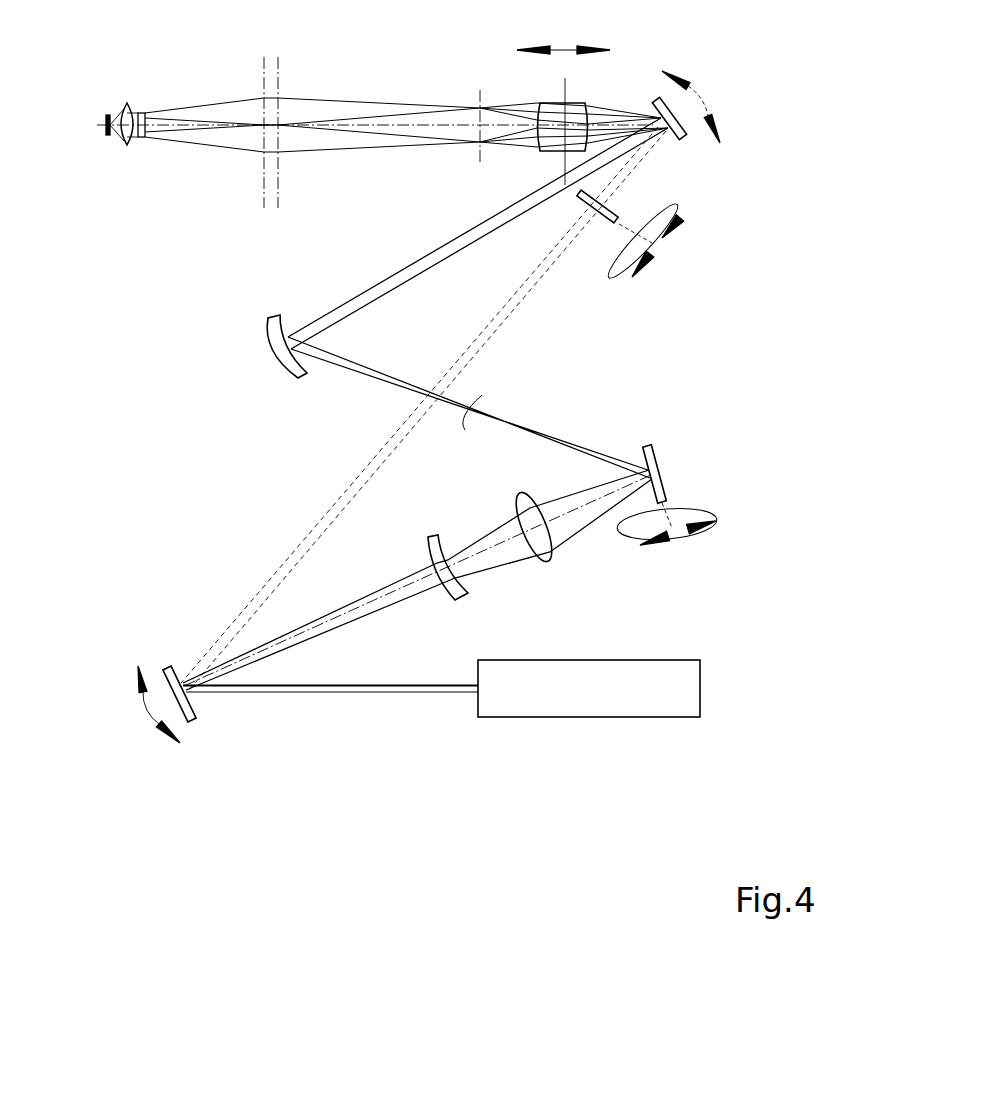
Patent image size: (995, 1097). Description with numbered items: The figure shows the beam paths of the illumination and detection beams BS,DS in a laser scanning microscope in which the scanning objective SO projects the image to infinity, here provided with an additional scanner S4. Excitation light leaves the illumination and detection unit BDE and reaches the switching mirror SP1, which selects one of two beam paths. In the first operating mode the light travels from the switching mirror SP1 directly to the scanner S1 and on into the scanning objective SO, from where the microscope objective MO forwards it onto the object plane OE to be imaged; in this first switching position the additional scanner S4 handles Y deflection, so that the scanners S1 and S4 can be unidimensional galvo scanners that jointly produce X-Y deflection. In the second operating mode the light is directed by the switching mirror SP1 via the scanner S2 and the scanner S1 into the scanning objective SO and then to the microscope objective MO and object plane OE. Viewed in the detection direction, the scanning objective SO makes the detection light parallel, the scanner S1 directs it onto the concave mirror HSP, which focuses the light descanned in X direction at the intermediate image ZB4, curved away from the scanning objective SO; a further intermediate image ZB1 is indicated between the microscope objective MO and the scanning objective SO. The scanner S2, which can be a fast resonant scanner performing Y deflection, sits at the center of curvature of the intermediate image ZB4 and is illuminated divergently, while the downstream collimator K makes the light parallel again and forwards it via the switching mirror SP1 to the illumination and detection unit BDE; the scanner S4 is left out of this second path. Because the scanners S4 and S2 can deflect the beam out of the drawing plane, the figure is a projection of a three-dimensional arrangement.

The object plane OE is at (107, 140).
The microscope objective MO is at (123, 102).
The first intermediate image ZB1 is at (472, 85).
The scanning objective SO is at (563, 94).
The first scanner S1 is at (754, 100).
The additional scanner S4 is at (670, 238).
The concave mirror HSP is at (269, 368).
The intermediate image ZB4 is at (482, 400).
The second scanner S2 is at (659, 473).
The collimator K is at (493, 544).
The switching mirror SP1 is at (133, 704).
The illumination and detection beams BS,DS is at (350, 690).
The illumination and detection unit BDE is at (589, 688).